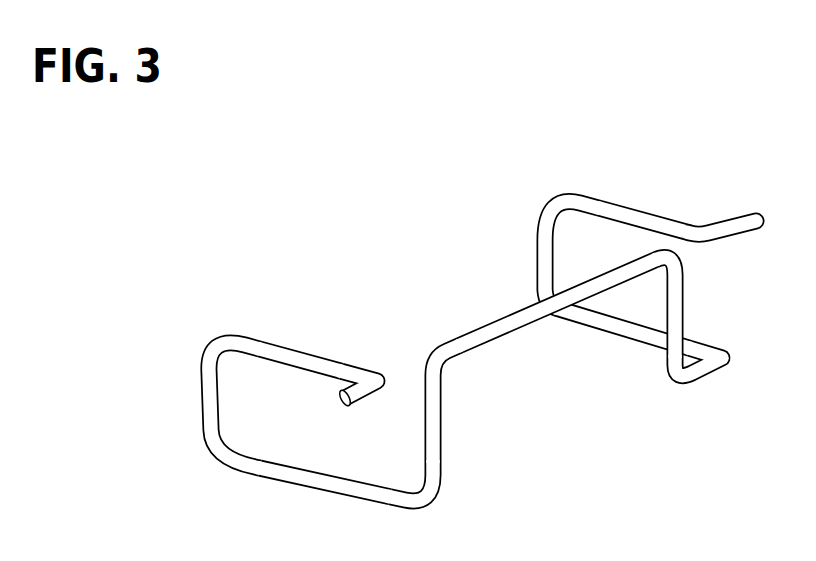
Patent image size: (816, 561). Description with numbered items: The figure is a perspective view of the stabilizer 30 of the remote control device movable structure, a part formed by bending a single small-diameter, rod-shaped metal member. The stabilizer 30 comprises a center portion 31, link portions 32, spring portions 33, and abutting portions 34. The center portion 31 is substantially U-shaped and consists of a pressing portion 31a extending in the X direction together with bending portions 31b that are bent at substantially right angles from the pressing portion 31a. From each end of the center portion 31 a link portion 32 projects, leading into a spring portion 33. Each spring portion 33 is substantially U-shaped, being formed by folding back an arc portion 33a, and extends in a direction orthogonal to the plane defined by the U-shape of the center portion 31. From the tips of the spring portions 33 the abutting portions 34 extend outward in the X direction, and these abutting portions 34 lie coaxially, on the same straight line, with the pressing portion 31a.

The stabilizer 30 is at (455, 262).
The center portion 31 is at (518, 337).
The pressing portion 31a is at (556, 322).
The bending portions 31b is at (442, 424).
The link portions 32 is at (425, 493).
The spring portions 33 is at (607, 198).
The arc portions 33a is at (533, 233).
The abutting portions 34 is at (740, 213).